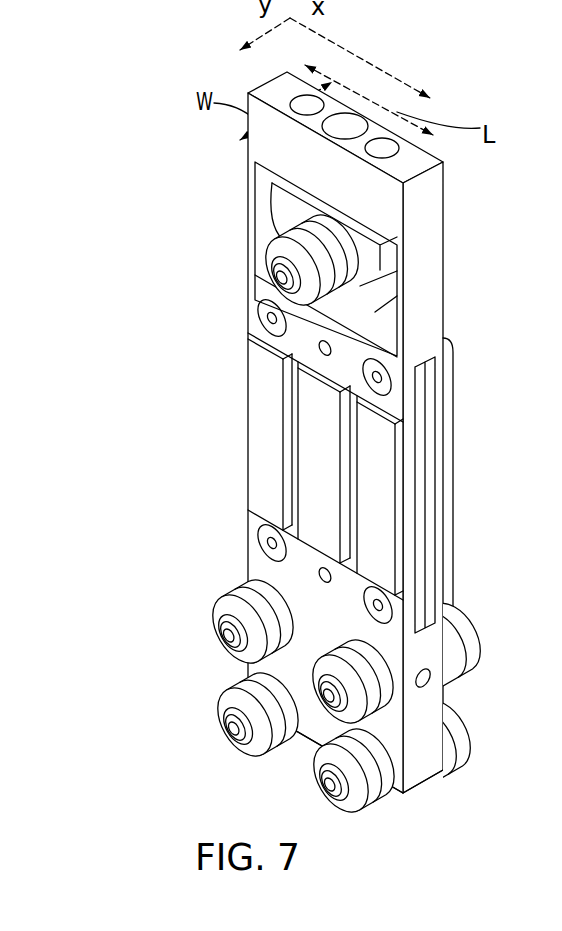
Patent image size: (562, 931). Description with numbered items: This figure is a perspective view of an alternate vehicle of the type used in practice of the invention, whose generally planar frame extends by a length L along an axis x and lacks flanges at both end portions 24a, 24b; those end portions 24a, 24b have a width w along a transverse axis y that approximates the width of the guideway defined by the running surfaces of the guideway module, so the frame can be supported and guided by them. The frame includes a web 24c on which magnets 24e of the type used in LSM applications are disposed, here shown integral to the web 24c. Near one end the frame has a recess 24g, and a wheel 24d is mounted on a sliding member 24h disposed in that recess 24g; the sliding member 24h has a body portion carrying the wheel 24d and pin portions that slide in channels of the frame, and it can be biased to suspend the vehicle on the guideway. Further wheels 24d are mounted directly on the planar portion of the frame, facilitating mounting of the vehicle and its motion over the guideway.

The end portion 24a is at (435, 190).
The end portion 24b is at (427, 764).
The web 24c is at (433, 258).
The wheel 24d is at (264, 236).
The magnets 24e is at (320, 451).
The recess 24g is at (375, 310).
The sliding member 24h is at (330, 224).